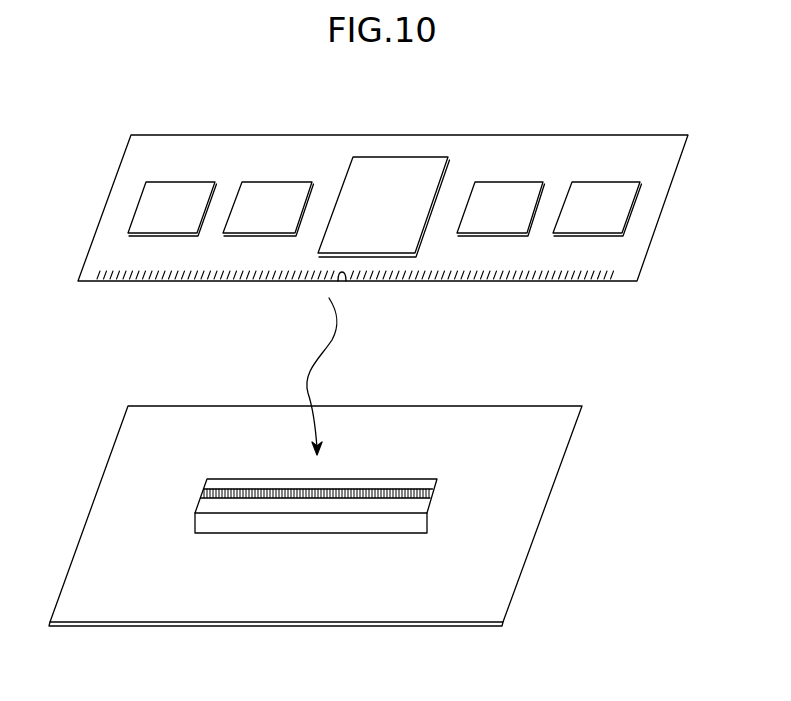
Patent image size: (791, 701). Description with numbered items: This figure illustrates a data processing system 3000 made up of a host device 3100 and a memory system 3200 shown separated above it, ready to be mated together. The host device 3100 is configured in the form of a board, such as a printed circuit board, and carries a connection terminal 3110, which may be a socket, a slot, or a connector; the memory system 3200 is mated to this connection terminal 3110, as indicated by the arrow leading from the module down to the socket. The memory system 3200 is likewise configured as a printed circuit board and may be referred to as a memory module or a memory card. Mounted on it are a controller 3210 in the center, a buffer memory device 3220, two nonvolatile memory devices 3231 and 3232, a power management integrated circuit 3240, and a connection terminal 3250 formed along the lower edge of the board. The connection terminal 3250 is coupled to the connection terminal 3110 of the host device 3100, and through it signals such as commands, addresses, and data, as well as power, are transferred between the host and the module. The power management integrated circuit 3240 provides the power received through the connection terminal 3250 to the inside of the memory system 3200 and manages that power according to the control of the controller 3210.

The data processing system 3000 is at (233, 100).
The host device 3100 is at (315, 516).
The connection terminal 3110 is at (453, 470).
The memory system 3200 is at (383, 228).
The controller 3210 is at (384, 207).
The buffer memory device 3220 is at (268, 209).
The nonvolatile memory device 3231 is at (501, 209).
The nonvolatile memory device 3232 is at (597, 209).
The power management integrated circuit 3240 is at (172, 209).
The connection terminal 3250 is at (115, 281).